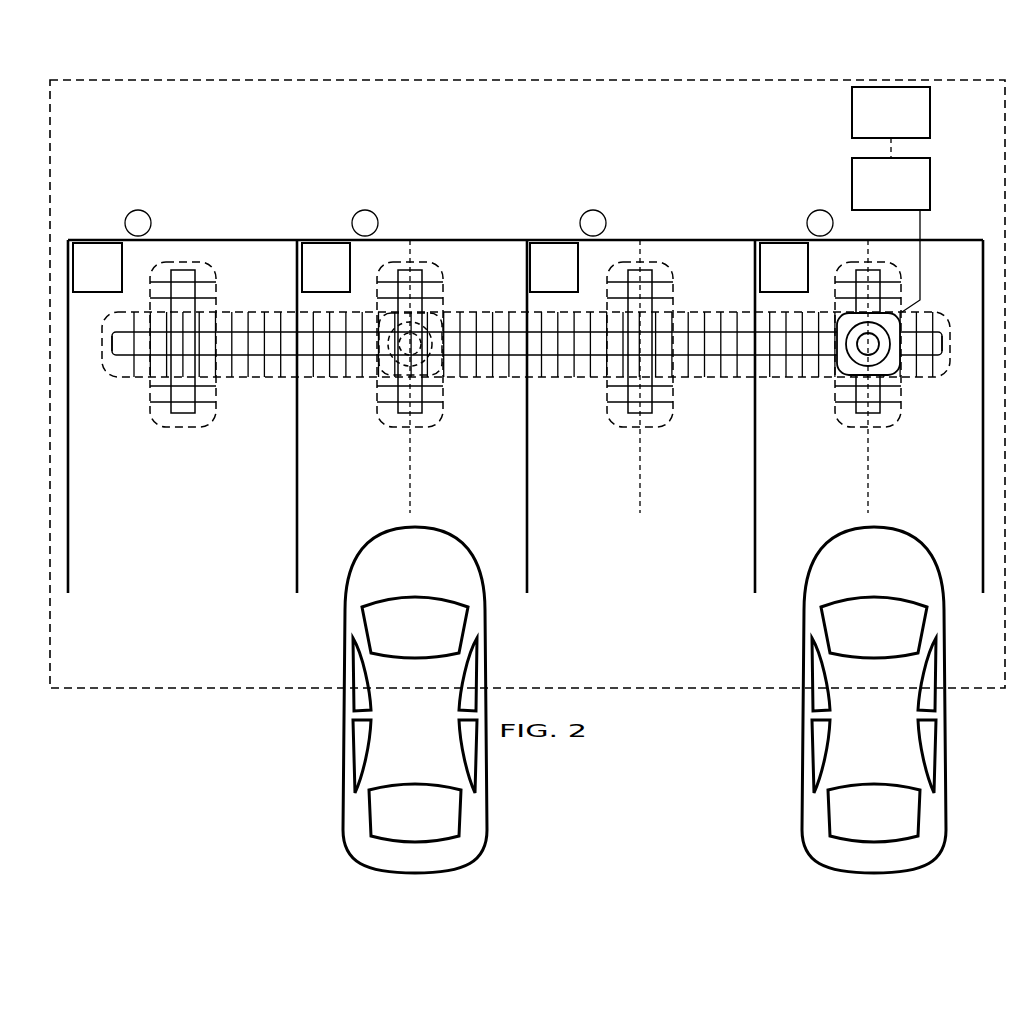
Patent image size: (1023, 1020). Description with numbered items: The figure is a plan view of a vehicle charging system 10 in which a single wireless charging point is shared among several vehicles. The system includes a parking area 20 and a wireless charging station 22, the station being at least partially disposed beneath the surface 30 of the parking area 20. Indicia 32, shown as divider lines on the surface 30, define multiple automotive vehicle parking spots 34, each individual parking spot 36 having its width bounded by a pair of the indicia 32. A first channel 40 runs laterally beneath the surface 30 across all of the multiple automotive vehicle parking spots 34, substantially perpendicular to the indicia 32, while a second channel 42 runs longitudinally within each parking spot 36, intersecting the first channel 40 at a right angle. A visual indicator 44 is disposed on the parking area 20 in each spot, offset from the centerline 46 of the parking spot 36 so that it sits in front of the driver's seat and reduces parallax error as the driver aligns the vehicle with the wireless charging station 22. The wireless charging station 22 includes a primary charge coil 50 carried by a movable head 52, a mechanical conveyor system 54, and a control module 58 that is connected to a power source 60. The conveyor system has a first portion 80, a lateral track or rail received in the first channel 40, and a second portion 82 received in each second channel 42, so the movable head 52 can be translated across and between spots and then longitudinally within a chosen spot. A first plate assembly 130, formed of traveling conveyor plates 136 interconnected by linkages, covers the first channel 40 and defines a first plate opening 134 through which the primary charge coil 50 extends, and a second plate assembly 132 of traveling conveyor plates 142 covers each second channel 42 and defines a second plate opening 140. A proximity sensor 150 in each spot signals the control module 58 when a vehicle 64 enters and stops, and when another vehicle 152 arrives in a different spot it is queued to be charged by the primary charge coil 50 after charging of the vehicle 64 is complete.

The vehicle charging system 10 is at (113, 70).
The parking area 20 is at (725, 78).
The wireless charging station 22 is at (956, 203).
The surface 30 is at (705, 172).
The indicia 32 is at (222, 238).
The multiple automotive vehicle parking spots 34 is at (160, 612).
The parking spot 36 is at (132, 525).
The first channel 40 is at (257, 378).
The second channel 42 is at (222, 270).
The visual indicator 44 is at (139, 210).
The centerline 46 is at (410, 500).
The primary charge coil 50 is at (403, 362).
The movable head 52 is at (398, 352).
The mechanical conveyor system 54 is at (940, 316).
The control module 58 is at (891, 235).
The power source 60 is at (891, 122).
The vehicle 64 is at (933, 548).
The first portion 80 is at (275, 355).
The second portion 82 is at (195, 297).
The first plate assembly 130 is at (237, 380).
The second plate assembly 132 is at (183, 262).
The first plate opening 134 is at (205, 370).
The traveling conveyor plates 136 is at (127, 367).
The second plate opening 140 is at (140, 320).
The traveling conveyor plates 142 is at (157, 273).
The proximity sensor 150 is at (440, 267).
The another vehicle 152 is at (475, 592).